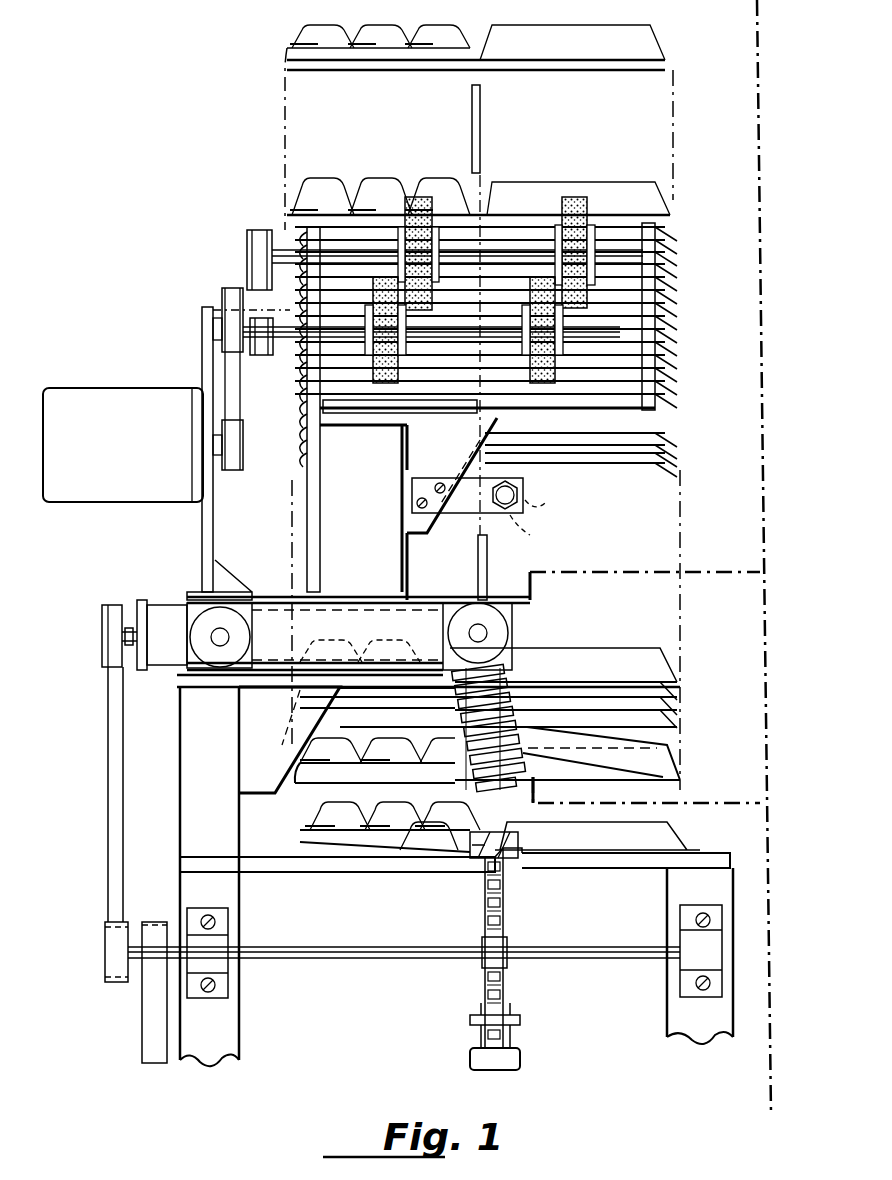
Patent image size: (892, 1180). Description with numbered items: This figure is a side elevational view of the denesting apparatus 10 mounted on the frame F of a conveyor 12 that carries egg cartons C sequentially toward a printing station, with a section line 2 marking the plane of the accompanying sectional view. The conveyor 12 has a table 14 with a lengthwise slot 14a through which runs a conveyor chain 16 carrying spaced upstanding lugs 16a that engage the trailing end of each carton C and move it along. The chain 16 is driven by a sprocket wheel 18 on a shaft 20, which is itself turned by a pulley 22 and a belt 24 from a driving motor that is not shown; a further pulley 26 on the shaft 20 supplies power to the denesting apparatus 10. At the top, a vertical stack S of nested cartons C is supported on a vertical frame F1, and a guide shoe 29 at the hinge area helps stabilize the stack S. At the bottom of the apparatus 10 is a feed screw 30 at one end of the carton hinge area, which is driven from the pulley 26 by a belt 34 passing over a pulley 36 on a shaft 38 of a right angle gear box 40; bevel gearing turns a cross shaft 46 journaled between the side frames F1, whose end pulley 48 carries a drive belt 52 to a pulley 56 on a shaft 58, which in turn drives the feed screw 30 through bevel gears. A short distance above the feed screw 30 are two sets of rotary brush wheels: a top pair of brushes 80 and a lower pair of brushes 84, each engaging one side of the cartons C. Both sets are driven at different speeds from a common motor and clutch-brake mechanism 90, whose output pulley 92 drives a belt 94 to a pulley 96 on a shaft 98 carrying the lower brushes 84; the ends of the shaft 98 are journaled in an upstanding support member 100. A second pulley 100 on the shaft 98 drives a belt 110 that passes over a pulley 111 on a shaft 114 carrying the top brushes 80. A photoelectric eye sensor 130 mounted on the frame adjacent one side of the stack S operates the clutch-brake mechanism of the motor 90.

The section line 2 is at (782, 1090).
The apparatus 10 is at (128, 300).
The conveyor 12 is at (393, 1010).
The table 14 is at (362, 862).
The slot 14a is at (520, 868).
The conveyor chain 16 is at (503, 930).
The upstanding lugs 16a is at (520, 843).
The sprocket wheel 18 is at (470, 888).
The shaft 20 is at (445, 958).
The pulley 22 is at (188, 912).
The belt 24 is at (152, 1015).
The pulley 26 is at (103, 962).
The guide shoes 29 is at (482, 140).
The feed screw 30 is at (470, 760).
The belt 34 is at (108, 770).
The pulley 36 is at (102, 625).
The shaft 38 is at (128, 632).
The right angle gear box 40 is at (165, 612).
The shaft 46 is at (218, 640).
The pulley 48 is at (205, 640).
The drive belt 52 is at (330, 608).
The pulley 56 is at (487, 625).
The shaft 58 is at (480, 638).
The brush wheels 80 is at (422, 197).
The brush wheels 84 is at (388, 383).
The motor and clutch-brake mechanism 90 is at (120, 410).
The output pulley 92 is at (245, 465).
The drive belt 94 is at (236, 415).
The pulley 96 is at (220, 345).
The shaft 98 is at (470, 400).
The upstanding support member 100 is at (255, 355).
The belt 110 is at (258, 305).
The pulley 111 is at (250, 245).
The shaft 114 is at (278, 232).
The photoelectric eye sensor 130 is at (523, 490).
The cartons C is at (665, 838).
The frame F is at (212, 1048).
The vertical frame F1 is at (345, 512).
The stack S is at (660, 135).